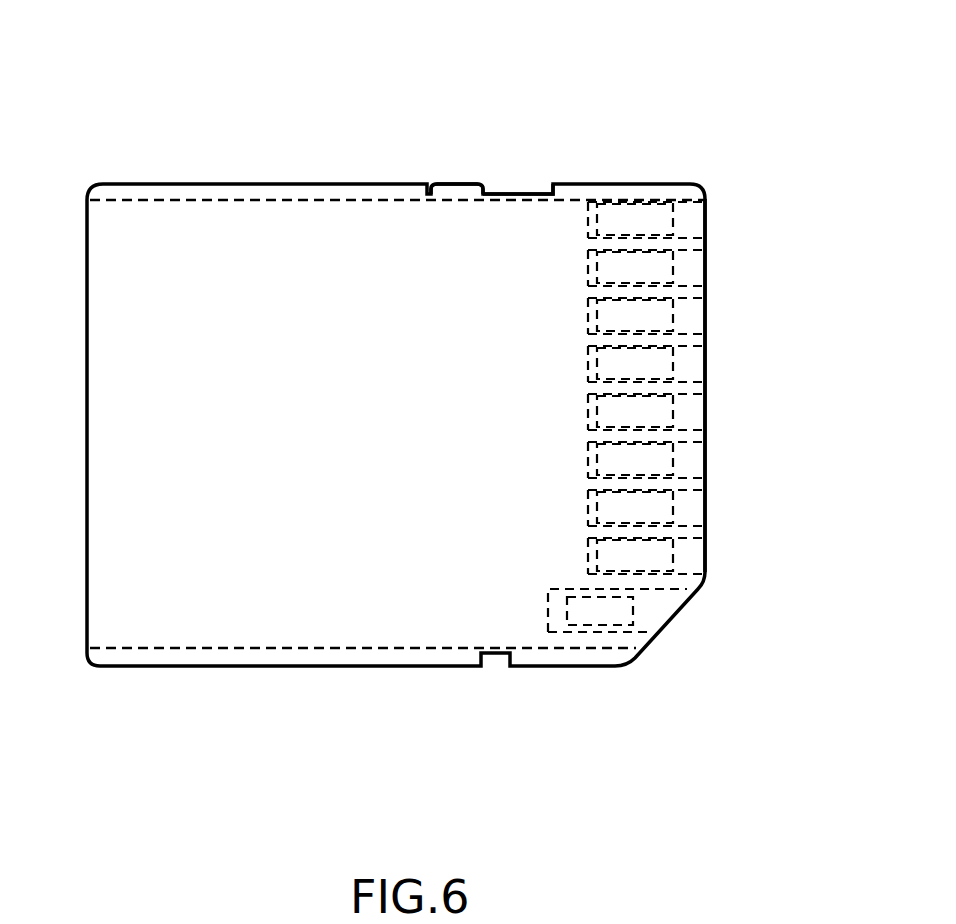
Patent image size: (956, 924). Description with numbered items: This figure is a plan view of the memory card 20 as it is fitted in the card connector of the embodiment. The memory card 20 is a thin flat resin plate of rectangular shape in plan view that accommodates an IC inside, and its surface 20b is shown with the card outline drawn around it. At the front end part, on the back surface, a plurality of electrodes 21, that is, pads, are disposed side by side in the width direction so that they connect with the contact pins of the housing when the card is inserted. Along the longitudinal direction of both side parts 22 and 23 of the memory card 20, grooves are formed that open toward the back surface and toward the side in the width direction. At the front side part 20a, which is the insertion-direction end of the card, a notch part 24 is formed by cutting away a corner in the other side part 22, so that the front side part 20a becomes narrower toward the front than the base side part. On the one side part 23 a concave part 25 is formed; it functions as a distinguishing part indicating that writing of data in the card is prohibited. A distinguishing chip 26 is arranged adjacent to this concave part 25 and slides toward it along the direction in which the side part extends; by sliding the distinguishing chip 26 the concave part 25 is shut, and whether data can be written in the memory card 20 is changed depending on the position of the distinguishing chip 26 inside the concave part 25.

The memory card 20 is at (140, 124).
The front side part 20a is at (706, 216).
The main surface of memory card 20b is at (347, 223).
The electrodes 21 is at (650, 411).
The other side part 22 is at (322, 660).
The one side part 23 is at (257, 183).
The notch part 24 is at (668, 626).
The concave part 25 is at (538, 193).
The distinguishing chip 26 is at (452, 183).